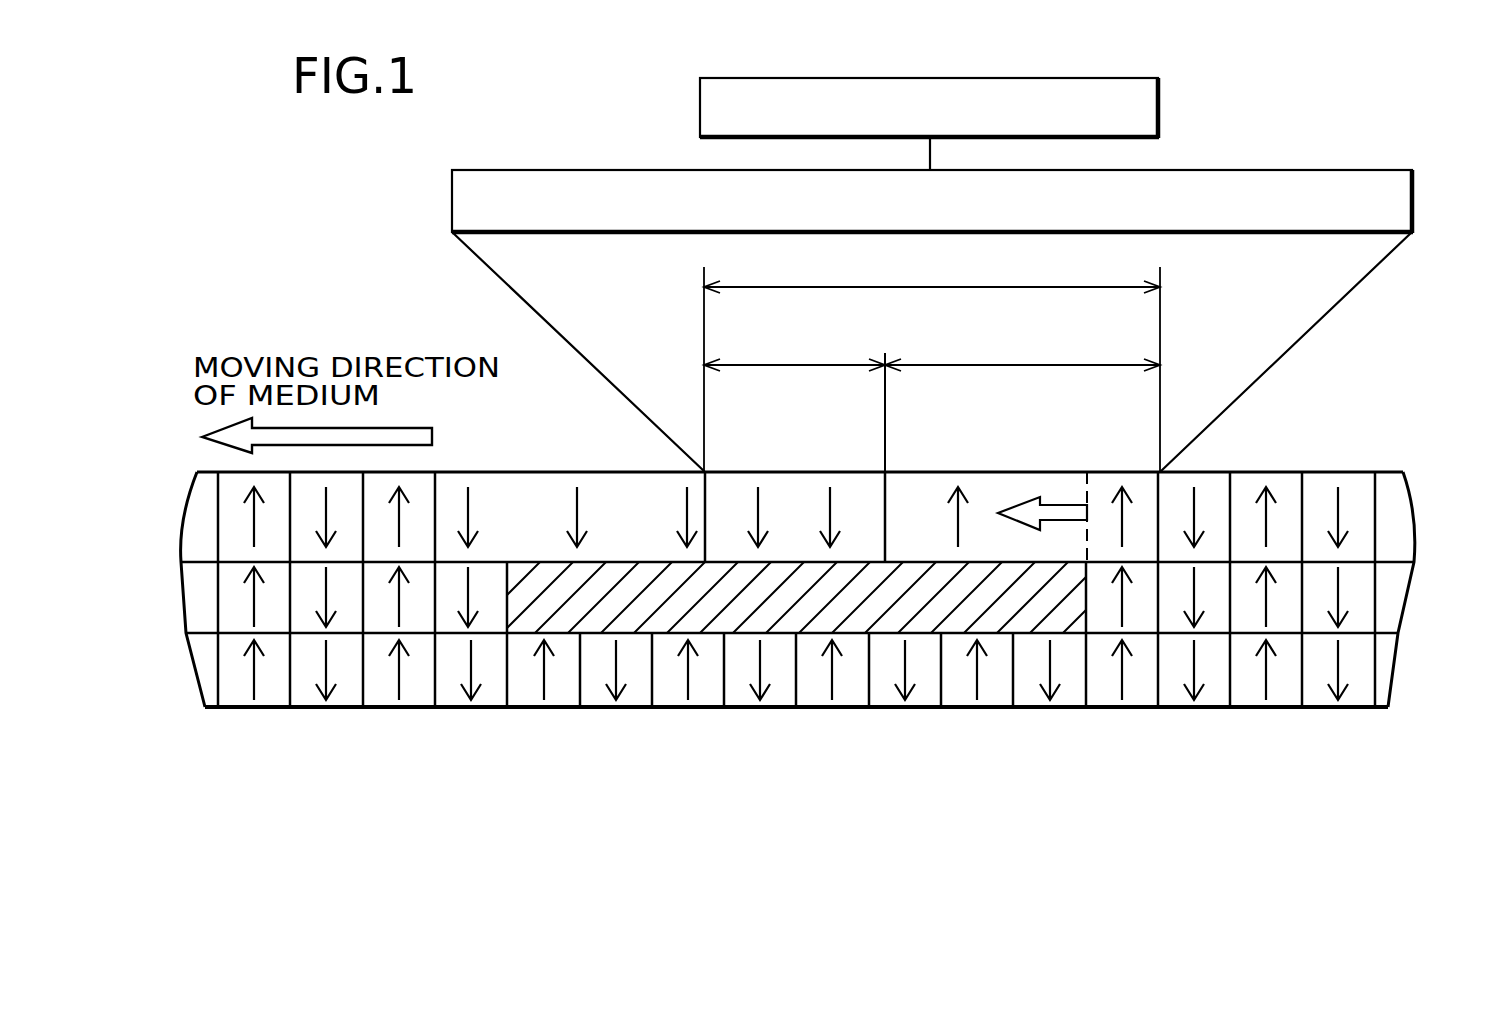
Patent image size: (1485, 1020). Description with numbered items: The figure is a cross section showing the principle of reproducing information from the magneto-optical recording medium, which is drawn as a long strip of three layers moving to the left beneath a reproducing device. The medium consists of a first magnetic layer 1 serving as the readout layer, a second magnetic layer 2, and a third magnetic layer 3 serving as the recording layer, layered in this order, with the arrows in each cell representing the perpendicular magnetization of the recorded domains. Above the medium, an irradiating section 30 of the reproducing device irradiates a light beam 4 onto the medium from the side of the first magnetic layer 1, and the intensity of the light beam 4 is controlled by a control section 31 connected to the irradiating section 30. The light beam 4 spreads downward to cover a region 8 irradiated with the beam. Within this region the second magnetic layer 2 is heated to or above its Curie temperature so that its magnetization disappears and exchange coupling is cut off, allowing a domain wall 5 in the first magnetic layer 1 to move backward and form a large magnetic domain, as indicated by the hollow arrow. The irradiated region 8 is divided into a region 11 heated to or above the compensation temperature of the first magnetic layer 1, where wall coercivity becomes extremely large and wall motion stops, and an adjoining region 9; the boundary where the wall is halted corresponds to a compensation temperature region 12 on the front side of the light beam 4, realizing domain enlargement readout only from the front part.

The first magnetic layer 1 is at (1401, 535).
The second magnetic layer 2 is at (1394, 610).
The third magnetic layer 3 is at (1384, 673).
The light beam 4 is at (1352, 290).
The domain wall 5 is at (1068, 488).
The region irradiated with the light beam 8 is at (932, 359).
The erasing portion 9 is at (1022, 345).
The region heated to compensation temperature or higher 11 is at (794, 345).
The compensation temperature region 12 is at (860, 480).
The irradiating section 30 is at (1315, 170).
The control section 31 is at (1159, 118).